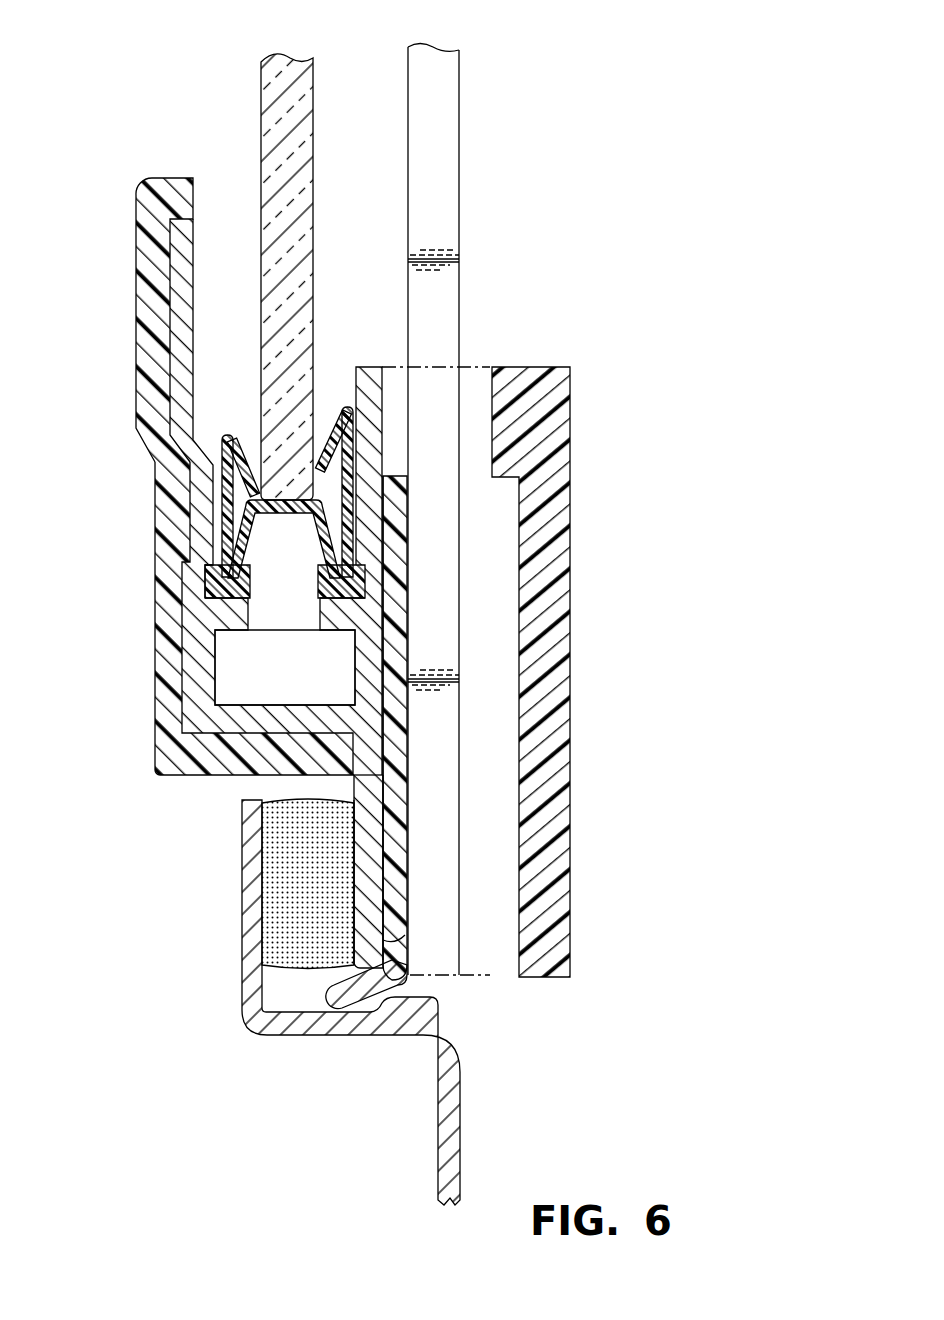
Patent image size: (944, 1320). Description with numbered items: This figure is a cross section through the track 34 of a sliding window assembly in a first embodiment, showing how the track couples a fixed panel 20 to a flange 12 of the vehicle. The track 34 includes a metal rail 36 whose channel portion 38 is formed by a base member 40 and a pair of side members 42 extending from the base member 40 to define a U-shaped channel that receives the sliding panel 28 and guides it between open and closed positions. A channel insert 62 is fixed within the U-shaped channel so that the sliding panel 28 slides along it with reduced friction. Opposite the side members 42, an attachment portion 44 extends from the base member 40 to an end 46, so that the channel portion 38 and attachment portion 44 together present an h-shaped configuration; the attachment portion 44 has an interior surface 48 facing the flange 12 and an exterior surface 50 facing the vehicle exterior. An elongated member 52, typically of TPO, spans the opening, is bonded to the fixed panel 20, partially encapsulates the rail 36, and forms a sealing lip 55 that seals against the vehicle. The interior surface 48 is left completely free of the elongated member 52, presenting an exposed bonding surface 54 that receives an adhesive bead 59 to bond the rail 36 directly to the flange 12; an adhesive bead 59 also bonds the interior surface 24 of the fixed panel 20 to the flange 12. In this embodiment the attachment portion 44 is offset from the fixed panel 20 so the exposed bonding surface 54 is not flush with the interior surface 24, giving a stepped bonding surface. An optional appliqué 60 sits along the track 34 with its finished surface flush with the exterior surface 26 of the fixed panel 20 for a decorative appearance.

The flange 12 is at (252, 882).
The second fixed panel 20 is at (440, 117).
The interior surface 24 is at (403, 112).
The exterior surface 26 is at (468, 195).
The sliding panel 28 is at (303, 100).
The track 34 is at (120, 172).
The rail 36 is at (215, 616).
The channel portion 38 is at (210, 246).
The base member 40 is at (248, 715).
The side members 42 is at (185, 328).
The attachment portion 44 is at (372, 830).
The end 46 is at (375, 950).
The interior surface 48 is at (348, 790).
The exterior surface 50 is at (400, 845).
The elongated member 52 is at (172, 513).
The exposed bonding surface 54 is at (345, 924).
The sealing lip 55 is at (367, 1002).
The adhesive bead 59 is at (300, 852).
The appliqué 60 is at (566, 505).
The channel insert 62 is at (228, 430).